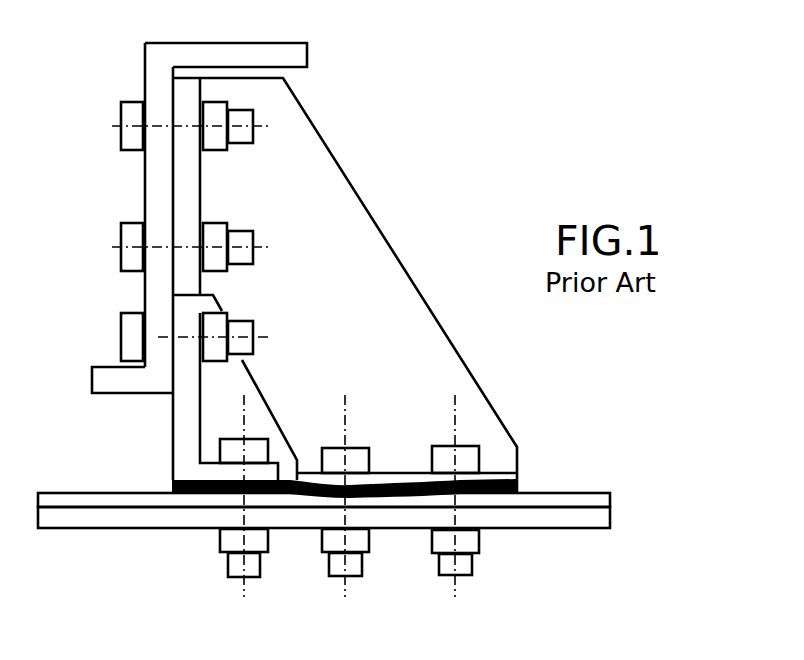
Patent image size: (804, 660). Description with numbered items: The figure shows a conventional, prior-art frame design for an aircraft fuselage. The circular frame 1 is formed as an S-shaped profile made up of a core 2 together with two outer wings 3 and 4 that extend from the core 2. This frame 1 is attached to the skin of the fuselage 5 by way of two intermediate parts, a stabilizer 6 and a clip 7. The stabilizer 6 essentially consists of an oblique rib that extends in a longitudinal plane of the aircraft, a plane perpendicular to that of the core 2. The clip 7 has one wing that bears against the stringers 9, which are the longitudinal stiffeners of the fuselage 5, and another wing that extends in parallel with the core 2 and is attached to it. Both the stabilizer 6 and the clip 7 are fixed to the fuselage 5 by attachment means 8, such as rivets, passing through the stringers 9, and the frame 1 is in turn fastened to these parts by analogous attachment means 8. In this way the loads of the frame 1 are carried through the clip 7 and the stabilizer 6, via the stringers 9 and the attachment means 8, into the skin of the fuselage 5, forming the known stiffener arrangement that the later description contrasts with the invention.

The circular frame 1 is at (203, 250).
The core 2 is at (157, 277).
The outer wing 3 is at (102, 382).
The outer wing 4 is at (298, 55).
The fuselage 5 is at (567, 518).
The stabilizer 6 is at (360, 230).
The clip 7 is at (185, 448).
The attachment means 8 is at (242, 140).
The stringers 9 is at (568, 498).